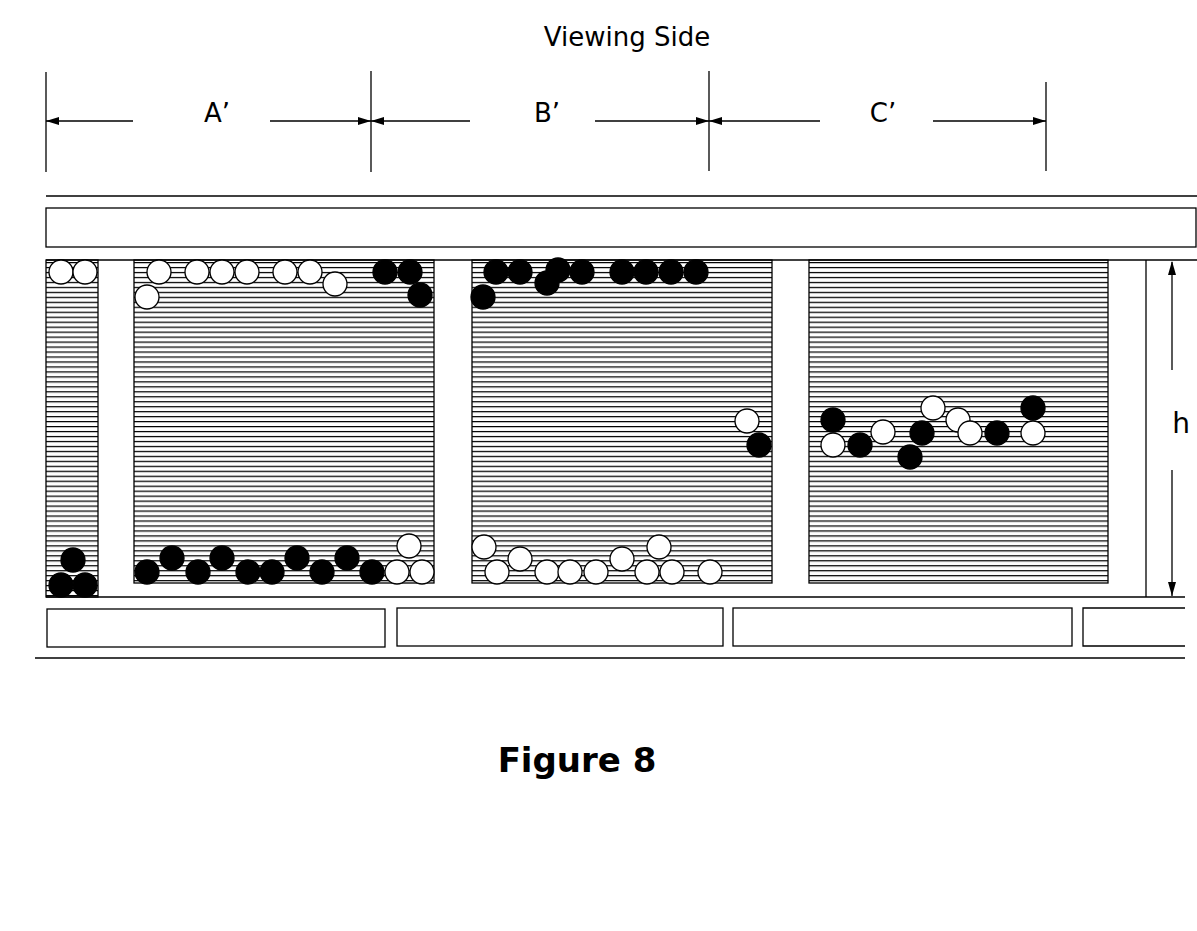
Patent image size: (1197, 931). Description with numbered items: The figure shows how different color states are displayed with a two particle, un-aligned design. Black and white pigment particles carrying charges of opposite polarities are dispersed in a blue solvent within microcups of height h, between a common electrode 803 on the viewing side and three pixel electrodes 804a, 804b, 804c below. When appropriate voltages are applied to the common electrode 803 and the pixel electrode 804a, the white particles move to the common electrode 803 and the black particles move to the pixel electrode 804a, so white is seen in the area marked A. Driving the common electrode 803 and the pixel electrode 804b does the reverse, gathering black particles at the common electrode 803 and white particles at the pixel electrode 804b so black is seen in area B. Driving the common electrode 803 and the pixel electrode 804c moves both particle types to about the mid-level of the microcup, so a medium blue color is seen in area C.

The common electrode 803 is at (621, 227).
The pixel electrode 804a is at (216, 628).
The pixel electrode 804b is at (560, 627).
The pixel electrode 804c is at (902, 627).